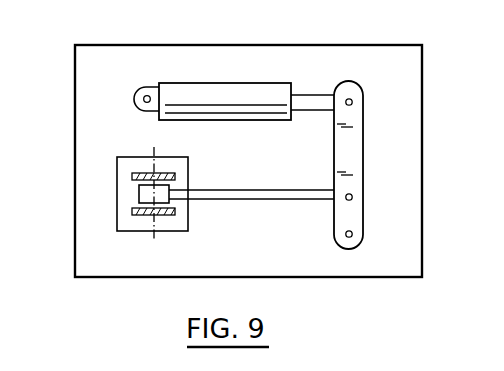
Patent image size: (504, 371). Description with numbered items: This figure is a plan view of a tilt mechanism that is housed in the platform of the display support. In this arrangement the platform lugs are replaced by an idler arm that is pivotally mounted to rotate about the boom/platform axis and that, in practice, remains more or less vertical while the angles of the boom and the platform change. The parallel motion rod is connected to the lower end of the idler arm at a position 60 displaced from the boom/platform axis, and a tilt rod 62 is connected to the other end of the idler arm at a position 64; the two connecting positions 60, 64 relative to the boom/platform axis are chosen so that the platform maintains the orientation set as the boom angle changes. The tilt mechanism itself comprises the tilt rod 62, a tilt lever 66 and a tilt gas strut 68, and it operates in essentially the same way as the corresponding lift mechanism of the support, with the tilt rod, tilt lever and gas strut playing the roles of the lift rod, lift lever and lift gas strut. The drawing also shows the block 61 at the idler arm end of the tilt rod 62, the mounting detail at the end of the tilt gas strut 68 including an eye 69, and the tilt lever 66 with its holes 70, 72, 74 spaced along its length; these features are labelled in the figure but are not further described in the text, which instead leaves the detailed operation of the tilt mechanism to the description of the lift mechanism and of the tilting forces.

The connecting position of parallel motion rod 60 is at (130, 216).
The slide block 61 is at (190, 172).
The tilt rod 62 is at (268, 200).
The connecting position of tilt rod 64 is at (152, 224).
The tilt lever 66 is at (363, 152).
The tilt gas strut 68 is at (205, 83).
The eye 69 is at (145, 85).
The hole 70 is at (352, 233).
The hole 72 is at (352, 101).
The hole 74 is at (352, 198).